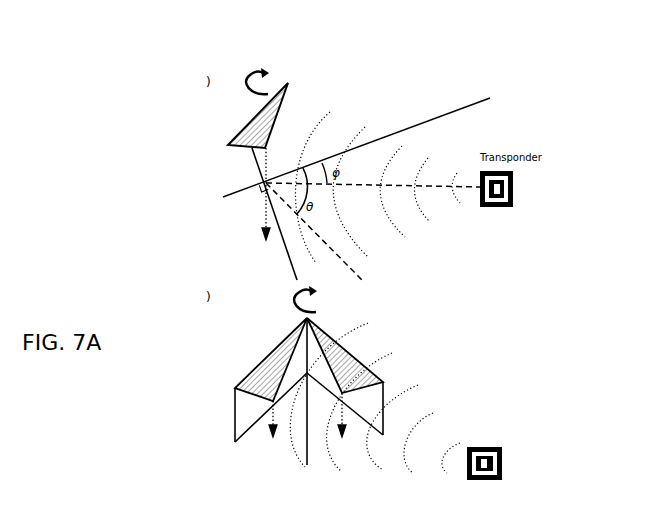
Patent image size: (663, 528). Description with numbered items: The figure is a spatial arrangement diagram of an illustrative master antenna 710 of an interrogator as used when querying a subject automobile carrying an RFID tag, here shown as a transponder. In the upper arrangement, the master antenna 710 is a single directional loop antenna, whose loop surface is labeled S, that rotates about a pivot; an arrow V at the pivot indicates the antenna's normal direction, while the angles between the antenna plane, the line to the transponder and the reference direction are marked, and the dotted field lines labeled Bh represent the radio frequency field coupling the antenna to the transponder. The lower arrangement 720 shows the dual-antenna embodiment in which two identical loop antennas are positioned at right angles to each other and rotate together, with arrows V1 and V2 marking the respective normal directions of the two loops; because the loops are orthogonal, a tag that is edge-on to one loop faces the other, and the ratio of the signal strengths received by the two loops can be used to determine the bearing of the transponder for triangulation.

The master antenna 710 is at (218, 132).
The dual loop antenna arrangement with transponder 720 is at (401, 383).
The loop antenna surface S is at (260, 115).
The velocity vector of loop antenna V is at (265, 208).
The velocity vector of first loop V1 is at (274, 433).
The velocity vector of second loop V2 is at (346, 429).
The magnetic field lines to transponder Bh is at (377, 187).